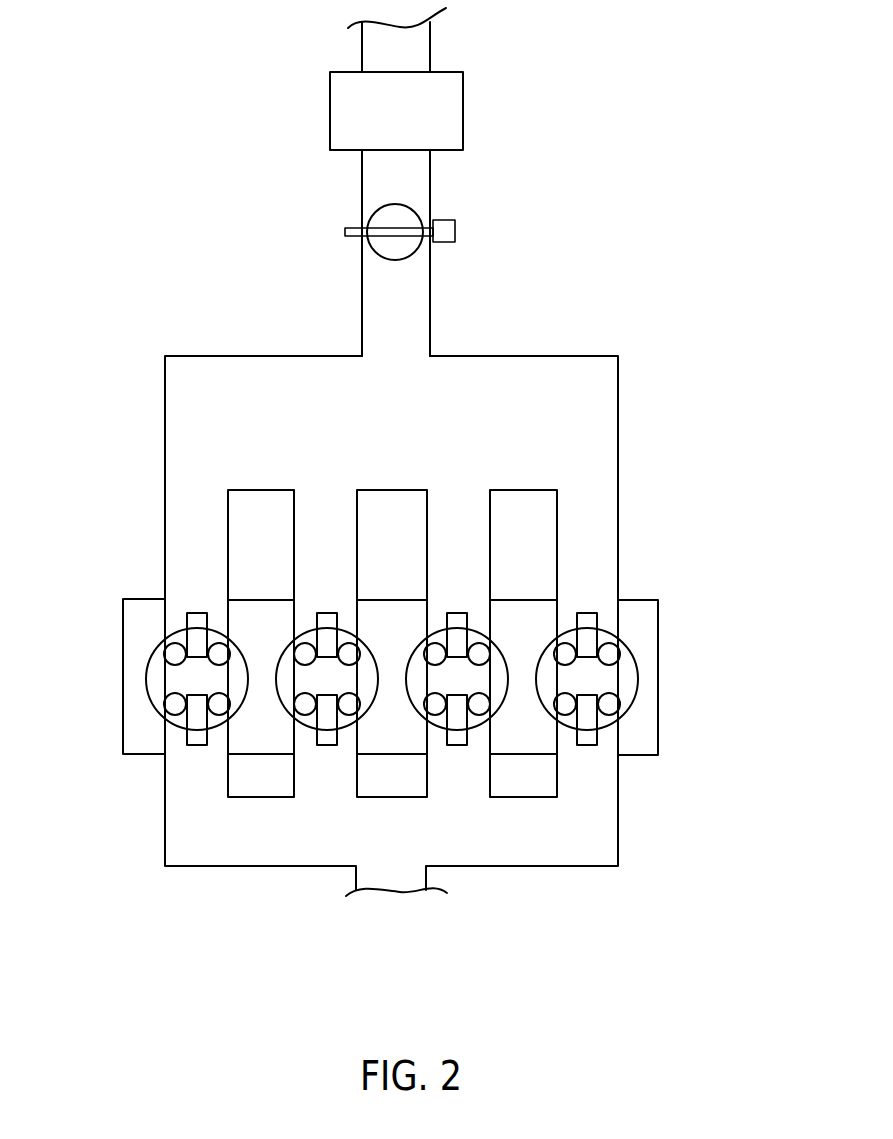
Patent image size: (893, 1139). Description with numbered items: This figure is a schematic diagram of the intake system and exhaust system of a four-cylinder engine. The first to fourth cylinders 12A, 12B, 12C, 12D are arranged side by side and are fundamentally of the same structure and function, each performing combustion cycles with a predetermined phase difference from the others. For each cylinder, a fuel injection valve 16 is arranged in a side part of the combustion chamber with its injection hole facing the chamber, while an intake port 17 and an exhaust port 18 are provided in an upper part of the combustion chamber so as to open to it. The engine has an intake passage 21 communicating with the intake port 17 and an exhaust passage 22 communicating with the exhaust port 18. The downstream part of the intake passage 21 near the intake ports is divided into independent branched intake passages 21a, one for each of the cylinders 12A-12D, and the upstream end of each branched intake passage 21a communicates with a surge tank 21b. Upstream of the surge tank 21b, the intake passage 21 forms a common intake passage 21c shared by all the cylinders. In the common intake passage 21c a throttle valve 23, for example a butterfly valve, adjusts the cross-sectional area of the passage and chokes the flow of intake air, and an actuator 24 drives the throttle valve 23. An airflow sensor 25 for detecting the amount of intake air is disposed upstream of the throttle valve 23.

The first cylinder 12A is at (150, 670).
The second cylinder 12B is at (282, 702).
The third cylinder 12C is at (495, 712).
The fourth cylinder 12D is at (638, 706).
The fuel injection valve 16 is at (185, 623).
The intake port 17 is at (173, 636).
The exhaust port 18 is at (177, 724).
The intake passage 21 is at (455, 523).
The branched intake passage 21a is at (619, 558).
The surge tank 21b is at (256, 425).
The common intake passage 21c is at (430, 333).
The exhaust passage 22 is at (603, 879).
The throttle valve 23 is at (392, 216).
The actuator 24 is at (455, 232).
The airflow sensor 25 is at (463, 118).